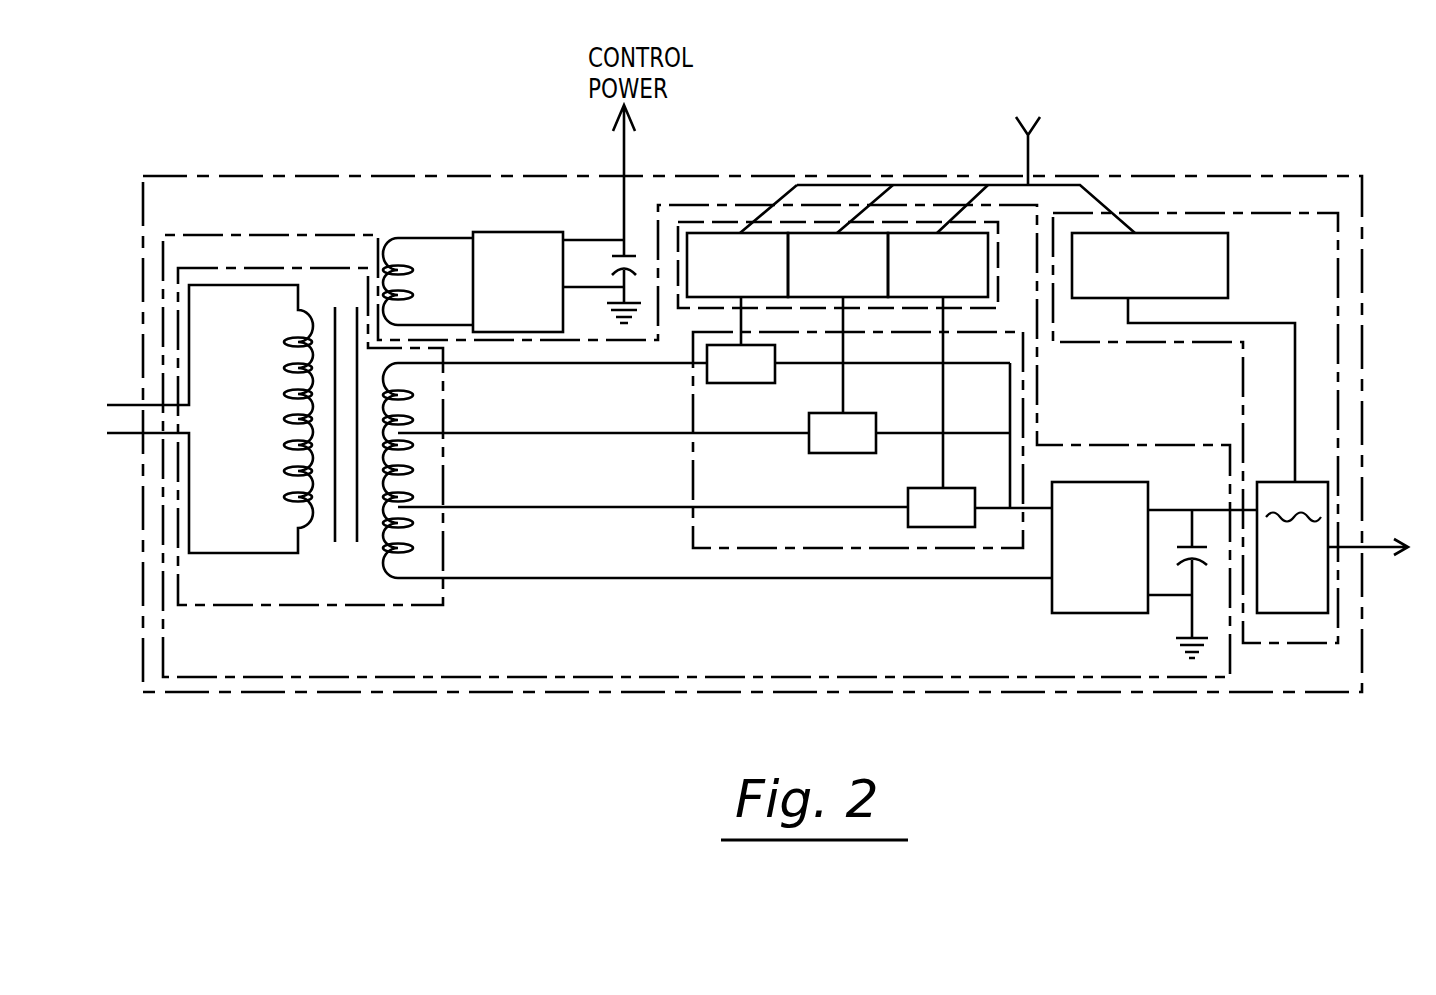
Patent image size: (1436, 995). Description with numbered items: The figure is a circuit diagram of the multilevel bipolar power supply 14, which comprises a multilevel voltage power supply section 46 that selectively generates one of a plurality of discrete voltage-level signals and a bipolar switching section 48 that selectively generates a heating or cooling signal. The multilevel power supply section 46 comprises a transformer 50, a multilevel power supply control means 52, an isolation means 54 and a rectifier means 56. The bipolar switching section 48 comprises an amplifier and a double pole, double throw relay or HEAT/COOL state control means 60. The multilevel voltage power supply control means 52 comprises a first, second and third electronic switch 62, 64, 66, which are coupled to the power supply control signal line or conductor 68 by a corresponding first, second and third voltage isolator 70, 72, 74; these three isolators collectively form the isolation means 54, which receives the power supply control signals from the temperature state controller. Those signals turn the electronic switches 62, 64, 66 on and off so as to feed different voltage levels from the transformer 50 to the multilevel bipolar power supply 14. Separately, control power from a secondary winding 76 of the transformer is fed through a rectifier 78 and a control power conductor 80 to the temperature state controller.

The multilevel bipolar power supply 14 is at (663, 692).
The multilevel voltage power supply section 46 is at (505, 677).
The bipolar switching section 48 is at (1340, 253).
The transformer 50 is at (293, 605).
The multilevel power supply control means 52 is at (688, 540).
The isolation means 54 is at (815, 233).
The rectifier means 56 is at (1026, 625).
The double pole, double throw relay 60 is at (1268, 613).
The first electronic switch 62 is at (705, 387).
The second electronic switch 64 is at (812, 453).
The third electronic switch 66 is at (910, 490).
The power supply control signal line 68 is at (1022, 150).
The first voltage isolator 70 is at (722, 233).
The second voltage isolator 72 is at (823, 233).
The third voltage isolator 74 is at (900, 233).
The secondary winding 76 is at (398, 255).
The rectifier 78 is at (491, 189).
The control power conductor 80 is at (623, 158).